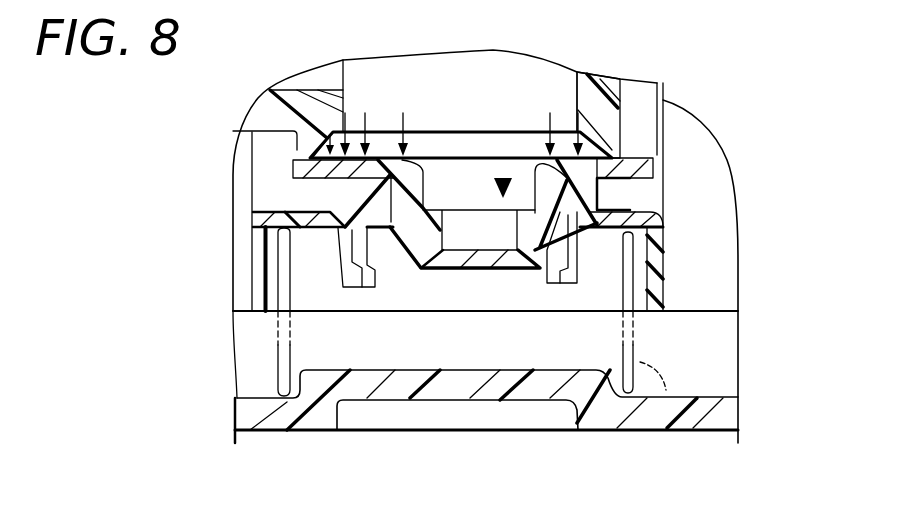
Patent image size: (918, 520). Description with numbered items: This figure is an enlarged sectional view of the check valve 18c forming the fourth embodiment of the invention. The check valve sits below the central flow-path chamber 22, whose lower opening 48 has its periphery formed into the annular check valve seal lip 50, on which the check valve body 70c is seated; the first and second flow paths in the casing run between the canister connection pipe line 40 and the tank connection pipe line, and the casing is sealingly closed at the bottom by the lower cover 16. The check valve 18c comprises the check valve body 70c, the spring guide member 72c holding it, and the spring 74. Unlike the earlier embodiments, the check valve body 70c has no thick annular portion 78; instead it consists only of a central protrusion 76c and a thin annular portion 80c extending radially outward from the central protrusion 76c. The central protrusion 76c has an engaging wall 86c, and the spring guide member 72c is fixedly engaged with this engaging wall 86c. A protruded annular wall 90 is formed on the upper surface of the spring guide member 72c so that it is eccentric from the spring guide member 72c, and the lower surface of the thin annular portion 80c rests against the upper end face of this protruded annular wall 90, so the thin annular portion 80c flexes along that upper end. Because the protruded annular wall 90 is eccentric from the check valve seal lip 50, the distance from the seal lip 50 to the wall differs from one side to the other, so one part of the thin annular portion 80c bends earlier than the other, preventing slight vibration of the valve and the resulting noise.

The lower cover 16 is at (597, 420).
The check valve 18c is at (503, 180).
The central flow-path chamber 22 is at (383, 70).
The canister connection pipe line 40 is at (250, 86).
The lower opening 48 is at (433, 143).
The check valve seal lip 50 is at (298, 148).
The check valve body 70c is at (432, 270).
The spring guide member 72c is at (652, 318).
The spring 74 is at (667, 400).
The central protrusion 76c is at (407, 220).
The thick annular portion 78 is at (570, 68).
The thin annular portion 80c is at (322, 177).
The engaging wall 86c is at (588, 222).
The protruded annular wall 90 is at (660, 193).